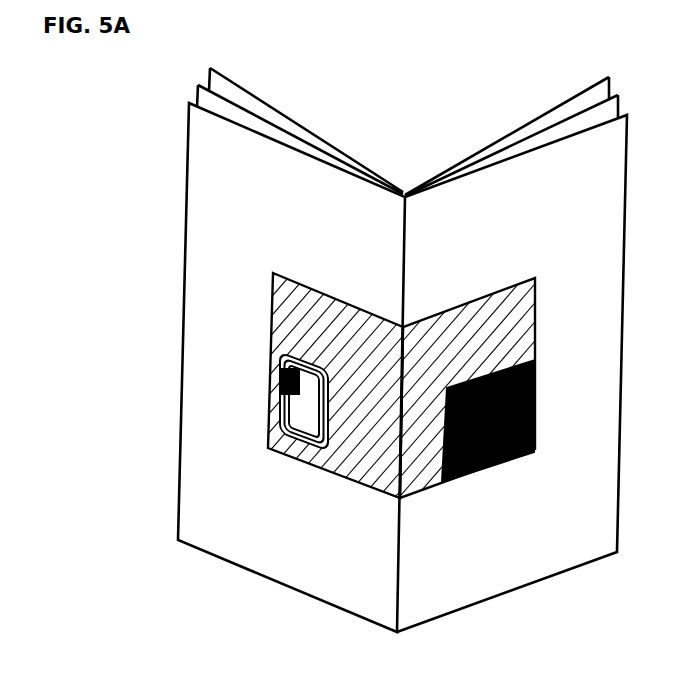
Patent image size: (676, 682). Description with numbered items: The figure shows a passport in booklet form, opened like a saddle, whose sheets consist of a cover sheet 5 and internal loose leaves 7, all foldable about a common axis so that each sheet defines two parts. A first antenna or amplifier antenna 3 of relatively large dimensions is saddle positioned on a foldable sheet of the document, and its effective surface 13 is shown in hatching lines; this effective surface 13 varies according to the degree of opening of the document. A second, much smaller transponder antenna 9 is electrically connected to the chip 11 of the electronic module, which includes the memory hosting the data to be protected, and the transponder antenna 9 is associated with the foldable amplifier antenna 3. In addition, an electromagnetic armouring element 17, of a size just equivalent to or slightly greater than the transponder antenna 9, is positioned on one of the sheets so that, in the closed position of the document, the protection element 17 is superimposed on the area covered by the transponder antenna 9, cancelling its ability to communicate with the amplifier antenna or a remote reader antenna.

The amplifier antenna 3 is at (273, 273).
The cover sheet 5 is at (550, 108).
The internal loose leaves 7 is at (527, 593).
The transponder antenna 9 is at (292, 352).
The chip 11 is at (282, 374).
The effective surface 13 is at (292, 313).
The electromagnetic armouring element 17 is at (533, 387).